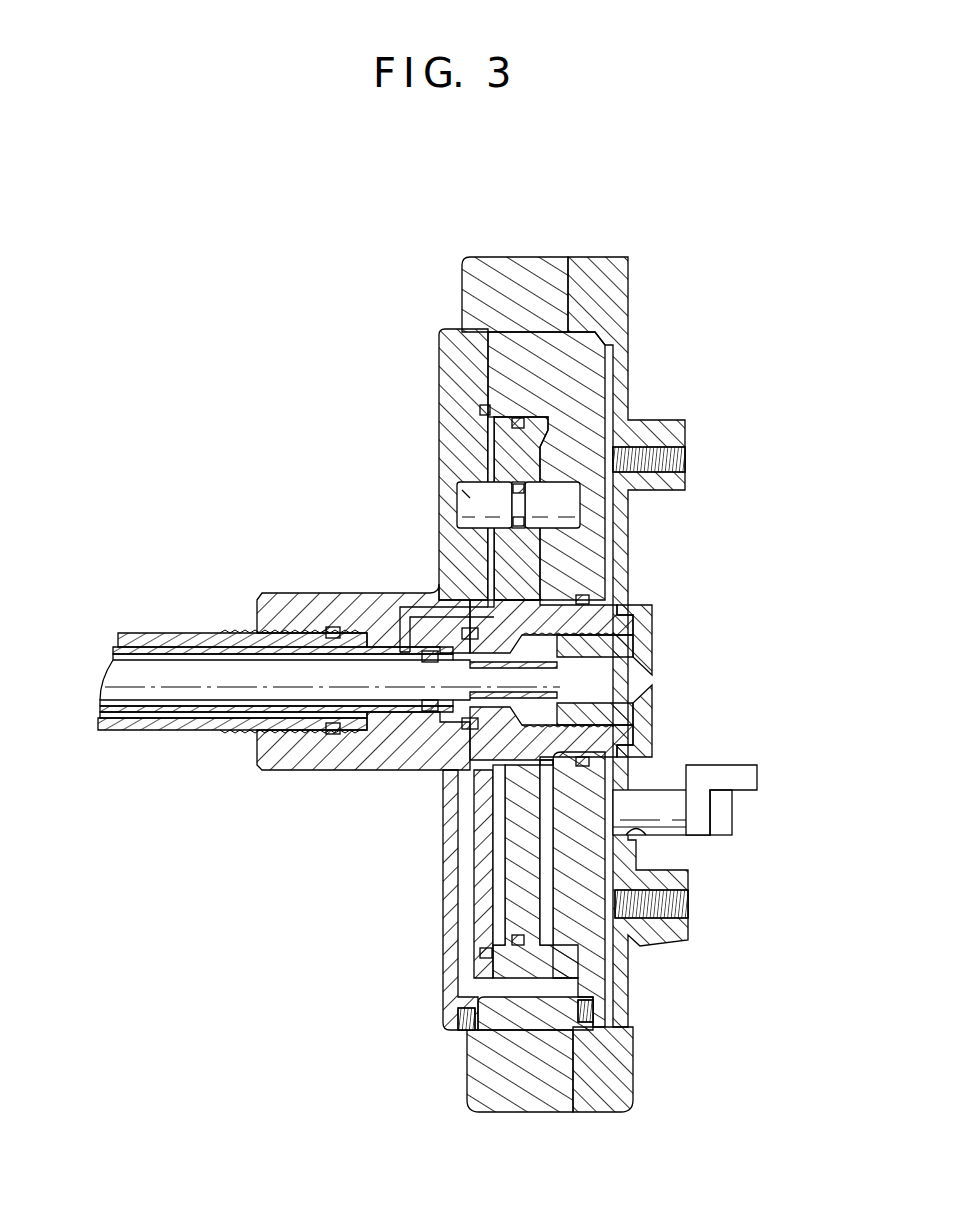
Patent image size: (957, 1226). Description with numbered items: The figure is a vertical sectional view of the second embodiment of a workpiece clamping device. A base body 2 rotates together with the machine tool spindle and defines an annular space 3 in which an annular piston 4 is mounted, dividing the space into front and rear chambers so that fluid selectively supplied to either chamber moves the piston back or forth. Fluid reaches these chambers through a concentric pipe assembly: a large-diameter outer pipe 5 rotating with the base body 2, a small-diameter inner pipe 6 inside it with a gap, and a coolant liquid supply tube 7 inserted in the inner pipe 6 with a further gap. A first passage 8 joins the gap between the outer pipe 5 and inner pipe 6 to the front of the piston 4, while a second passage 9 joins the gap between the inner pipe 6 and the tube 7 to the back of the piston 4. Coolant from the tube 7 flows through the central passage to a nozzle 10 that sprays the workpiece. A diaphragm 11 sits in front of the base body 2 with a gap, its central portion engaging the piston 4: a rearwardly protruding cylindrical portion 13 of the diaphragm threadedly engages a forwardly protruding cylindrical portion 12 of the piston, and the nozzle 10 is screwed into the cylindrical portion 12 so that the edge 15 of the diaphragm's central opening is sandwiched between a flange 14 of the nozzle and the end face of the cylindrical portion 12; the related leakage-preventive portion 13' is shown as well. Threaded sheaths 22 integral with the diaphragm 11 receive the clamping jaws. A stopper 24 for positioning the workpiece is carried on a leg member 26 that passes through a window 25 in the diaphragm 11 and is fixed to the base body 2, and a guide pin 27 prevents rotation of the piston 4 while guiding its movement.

The base body 2 is at (512, 278).
The space 3 is at (487, 893).
The piston 4 is at (520, 845).
The outer pipe 5 is at (155, 640).
The inner pipe 6 is at (118, 648).
The coolant liquid supply tube 7 is at (150, 675).
The first passage 8 is at (585, 968).
The second passage 9 is at (440, 612).
The nozzle 10 is at (660, 690).
The diaphragm 11 is at (622, 537).
The cylindrical portion 12 is at (600, 618).
The cylindrical portion 13 is at (595, 680).
The insert 13' is at (460, 800).
The flange 14 is at (650, 756).
The edge 15 is at (620, 633).
The threaded sheath 22 is at (680, 448).
The stopper 24 is at (740, 772).
The window 25 is at (650, 835).
The leg member 26 is at (672, 812).
The guide pin 27 is at (468, 497).